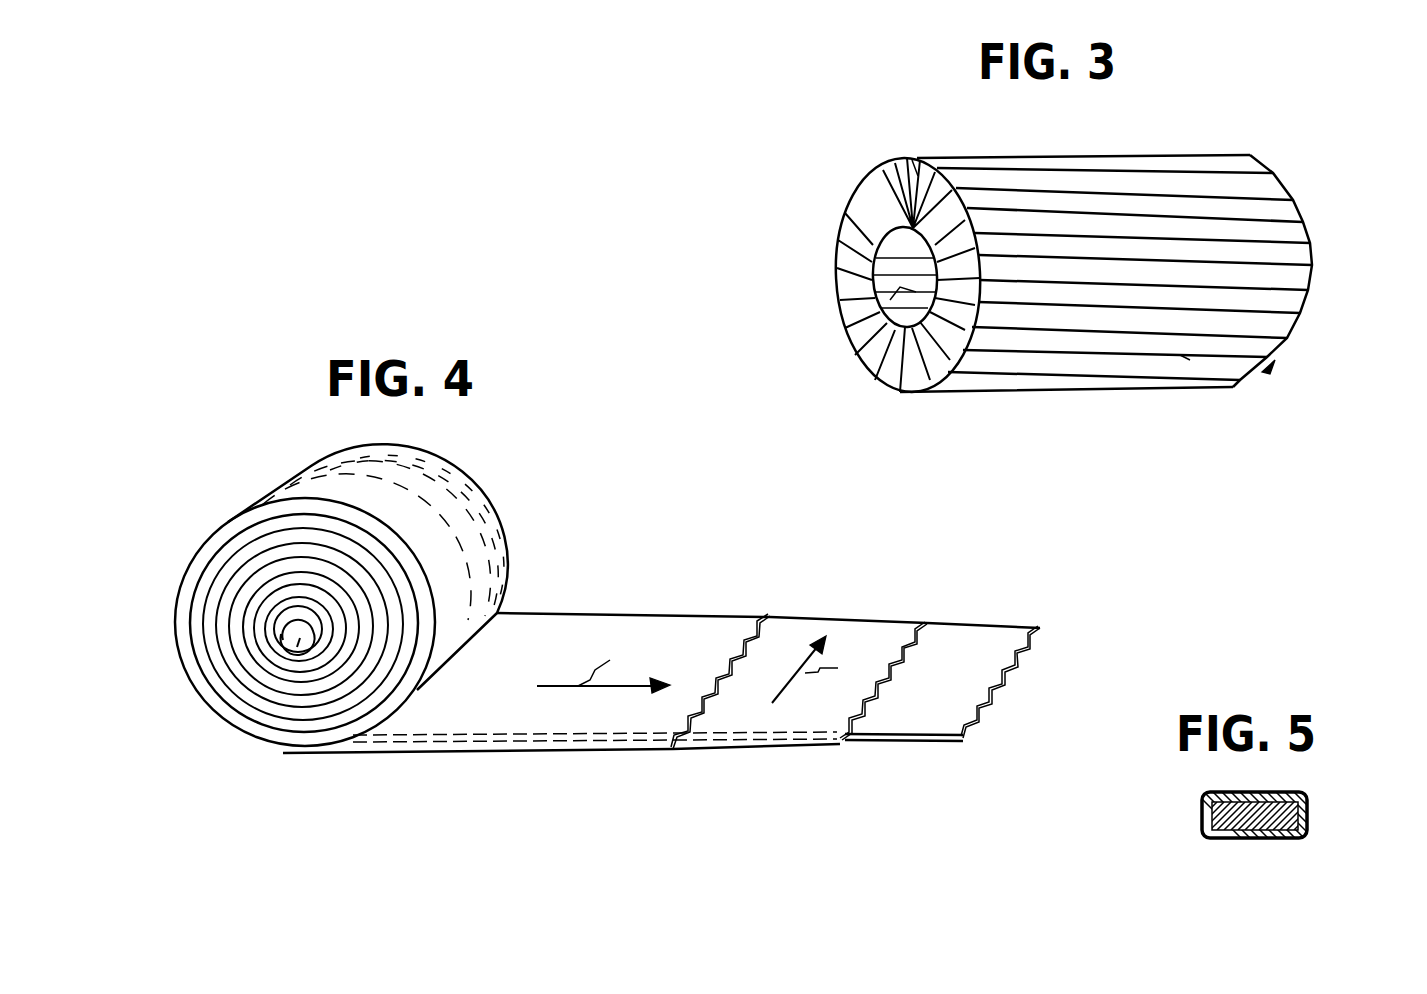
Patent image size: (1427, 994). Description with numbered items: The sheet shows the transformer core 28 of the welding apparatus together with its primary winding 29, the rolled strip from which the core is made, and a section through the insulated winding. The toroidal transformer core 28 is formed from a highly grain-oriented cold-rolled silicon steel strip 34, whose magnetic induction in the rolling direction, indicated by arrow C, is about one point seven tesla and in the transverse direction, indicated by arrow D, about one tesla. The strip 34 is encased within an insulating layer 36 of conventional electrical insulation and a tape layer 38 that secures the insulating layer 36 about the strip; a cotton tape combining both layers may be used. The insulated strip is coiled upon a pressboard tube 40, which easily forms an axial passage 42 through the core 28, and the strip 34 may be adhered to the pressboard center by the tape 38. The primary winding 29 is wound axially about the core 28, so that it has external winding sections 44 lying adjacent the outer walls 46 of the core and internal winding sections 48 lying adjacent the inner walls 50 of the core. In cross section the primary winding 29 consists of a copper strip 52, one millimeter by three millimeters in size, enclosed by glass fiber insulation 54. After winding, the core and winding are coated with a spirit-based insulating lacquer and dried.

In FIG. 3, the transformer core 28 is at (1122, 144).
In FIG. 3, the primary winding 29 is at (1303, 312).
In FIG. 4, the silicon steel strip 34 is at (965, 625).
In FIG. 4, the insulating layer 36 is at (872, 630).
In FIG. 4, the tape layer 38 is at (648, 622).
In FIG. 4, the pressboard tube 40 is at (288, 612).
In FIG. 4, the axial passage 42 is at (283, 633).
In FIG. 3, the external winding sections 44 is at (919, 172).
In FIG. 3, the outer walls 46 is at (860, 216).
In FIG. 3, the internal winding sections 48 is at (895, 243).
In FIG. 3, the inner walls 50 is at (898, 290).
In FIG. 5, the copper strip 52 is at (1307, 808).
In FIG. 5, the glass fiber insulation 54 is at (1303, 832).